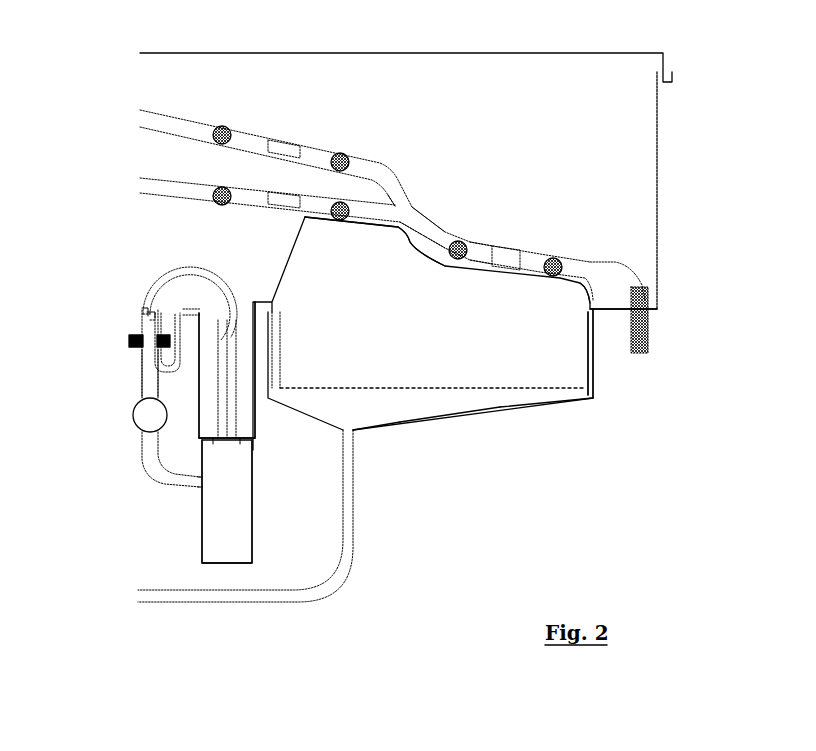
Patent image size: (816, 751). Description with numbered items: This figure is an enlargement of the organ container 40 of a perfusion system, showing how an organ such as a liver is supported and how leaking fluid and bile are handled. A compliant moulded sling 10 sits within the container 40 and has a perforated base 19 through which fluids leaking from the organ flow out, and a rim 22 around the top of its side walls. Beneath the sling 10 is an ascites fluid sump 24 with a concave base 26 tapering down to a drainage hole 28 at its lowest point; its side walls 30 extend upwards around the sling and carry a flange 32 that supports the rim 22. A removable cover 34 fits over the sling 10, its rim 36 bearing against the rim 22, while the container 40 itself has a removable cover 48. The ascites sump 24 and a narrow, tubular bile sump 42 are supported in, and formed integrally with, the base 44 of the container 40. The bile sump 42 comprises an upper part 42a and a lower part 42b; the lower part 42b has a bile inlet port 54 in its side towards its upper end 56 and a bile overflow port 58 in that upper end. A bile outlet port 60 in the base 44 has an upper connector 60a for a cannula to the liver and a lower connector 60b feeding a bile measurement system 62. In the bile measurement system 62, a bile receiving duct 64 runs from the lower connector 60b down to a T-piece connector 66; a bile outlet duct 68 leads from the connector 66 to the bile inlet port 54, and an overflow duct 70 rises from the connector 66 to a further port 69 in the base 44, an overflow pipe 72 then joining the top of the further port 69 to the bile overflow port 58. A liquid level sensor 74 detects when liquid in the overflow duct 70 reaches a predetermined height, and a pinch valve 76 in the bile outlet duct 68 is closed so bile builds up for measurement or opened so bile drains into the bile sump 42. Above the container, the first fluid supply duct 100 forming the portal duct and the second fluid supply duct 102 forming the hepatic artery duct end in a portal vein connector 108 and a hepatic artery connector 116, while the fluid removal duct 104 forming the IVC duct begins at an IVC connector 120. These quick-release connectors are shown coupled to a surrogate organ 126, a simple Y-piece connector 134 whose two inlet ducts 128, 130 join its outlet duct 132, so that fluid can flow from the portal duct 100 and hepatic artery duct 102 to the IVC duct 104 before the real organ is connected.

The sling 10 is at (588, 390).
The perforated base 19 is at (503, 390).
The rim 22 is at (603, 307).
The fluid sump 24 is at (462, 421).
The concave base 26 is at (548, 403).
The drainage hole 28 is at (355, 433).
The side walls 30 is at (592, 377).
The flange 32 is at (600, 310).
The removable cover 34 is at (430, 243).
The rim 36 is at (594, 300).
The organ container 40 is at (658, 192).
The bile sump 42 is at (255, 486).
The upper part 42a is at (254, 408).
The lower part 42b is at (253, 542).
The base 44 is at (153, 333).
The removable cover 48 is at (562, 53).
The bile inlet port 54 is at (200, 490).
The upper end 56 is at (253, 446).
The bile overflow port 58 is at (227, 445).
The bile outlet port 60 is at (172, 308).
The upper connector 60a is at (190, 305).
The lower connector 60b is at (155, 310).
The bile measurement system 62 is at (126, 390).
The bile receiving duct 64 is at (198, 335).
The T-piece connector 66 is at (147, 379).
The bile outlet duct 68 is at (148, 457).
The further port 69 is at (147, 310).
The overflow duct 70 is at (147, 335).
The overflow pipe 72 is at (150, 315).
The liquid level sensor 74 is at (125, 343).
The pinch valve 76 is at (143, 422).
The first fluid supply duct 100 is at (152, 180).
The second fluid supply duct 102 is at (197, 128).
The fluid removal duct 104 is at (620, 262).
The portal vein connector 108 is at (292, 197).
The hepatic artery connector 116 is at (285, 148).
The IVC connector 120 is at (508, 255).
The surrogate organ 126 is at (388, 164).
The inlet duct 128 is at (357, 203).
The inlet duct 130 is at (392, 183).
The outlet duct 132 is at (478, 250).
The Y-piece connector 134 is at (406, 216).